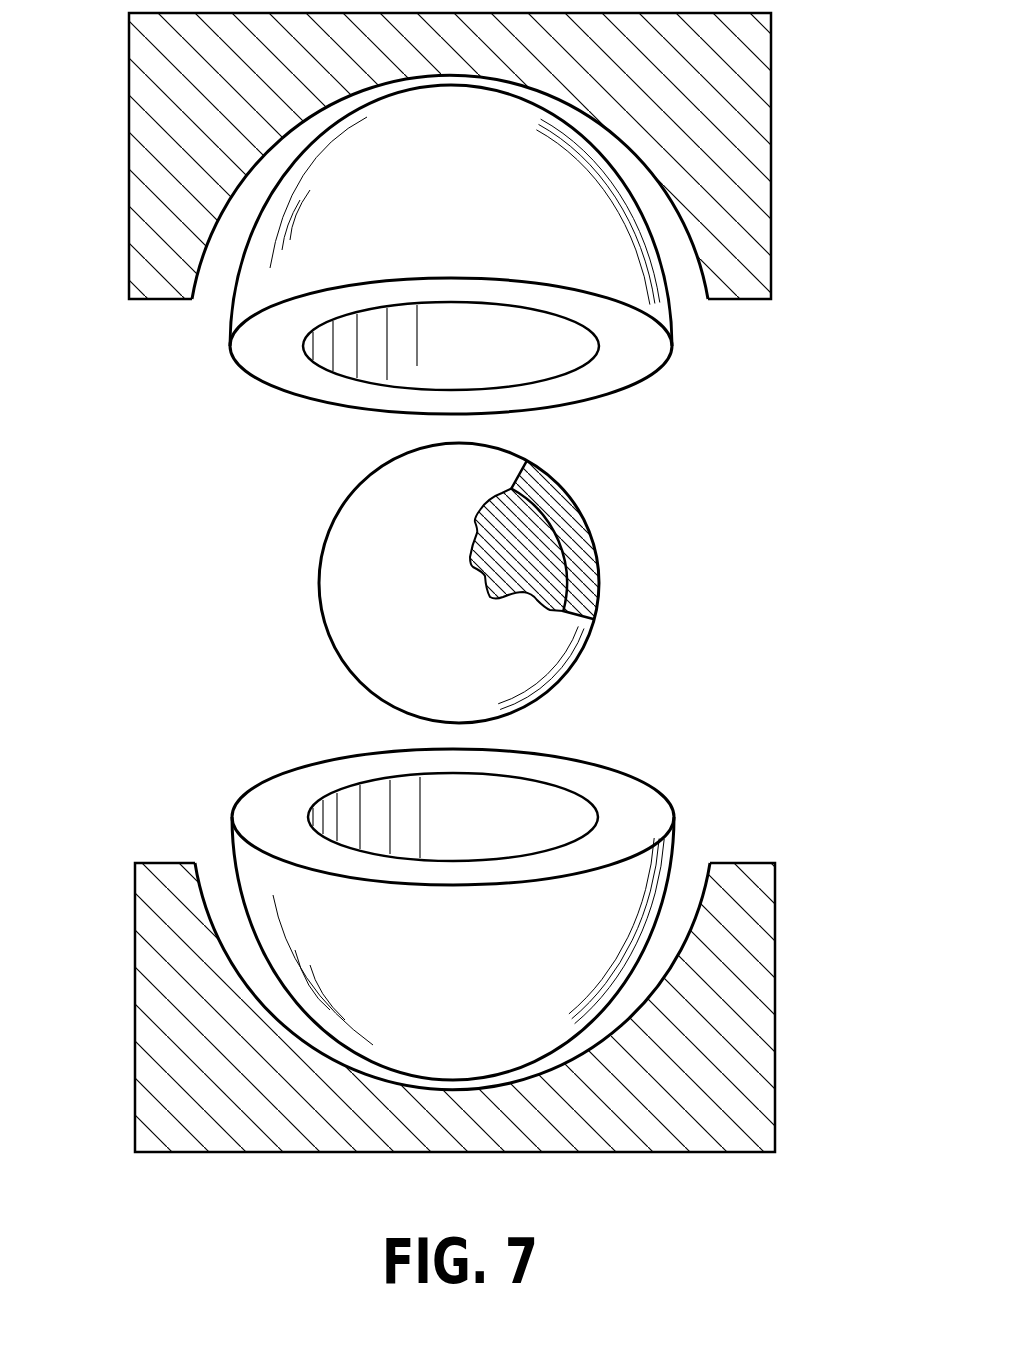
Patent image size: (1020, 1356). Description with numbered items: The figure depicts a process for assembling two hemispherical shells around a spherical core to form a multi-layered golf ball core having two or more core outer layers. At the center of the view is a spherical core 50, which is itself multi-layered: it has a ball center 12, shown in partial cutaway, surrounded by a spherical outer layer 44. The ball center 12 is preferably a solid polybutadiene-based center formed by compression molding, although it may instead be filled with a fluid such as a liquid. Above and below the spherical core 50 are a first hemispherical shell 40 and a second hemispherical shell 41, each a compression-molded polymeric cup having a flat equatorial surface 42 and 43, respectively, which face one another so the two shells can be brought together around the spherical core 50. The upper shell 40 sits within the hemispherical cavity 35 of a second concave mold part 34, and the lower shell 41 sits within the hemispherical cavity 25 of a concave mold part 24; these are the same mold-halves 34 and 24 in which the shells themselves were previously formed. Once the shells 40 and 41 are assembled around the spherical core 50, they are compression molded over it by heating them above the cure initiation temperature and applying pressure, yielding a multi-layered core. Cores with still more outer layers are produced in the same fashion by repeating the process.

The second concave mold part 34 is at (157, 175).
The hemispherical cavity 35 is at (645, 192).
The first hemispherical shell 40 is at (613, 252).
The flat equatorial surface 42 is at (273, 355).
The spherical core 50 is at (600, 506).
The ball center 12 is at (545, 568).
The spherical outer layer 44 is at (543, 645).
The flat equatorial surface 43 is at (273, 800).
The second hemispherical shell 41 is at (620, 925).
The hemispherical cavity 25 is at (665, 940).
The concave mold part 24 is at (737, 993).